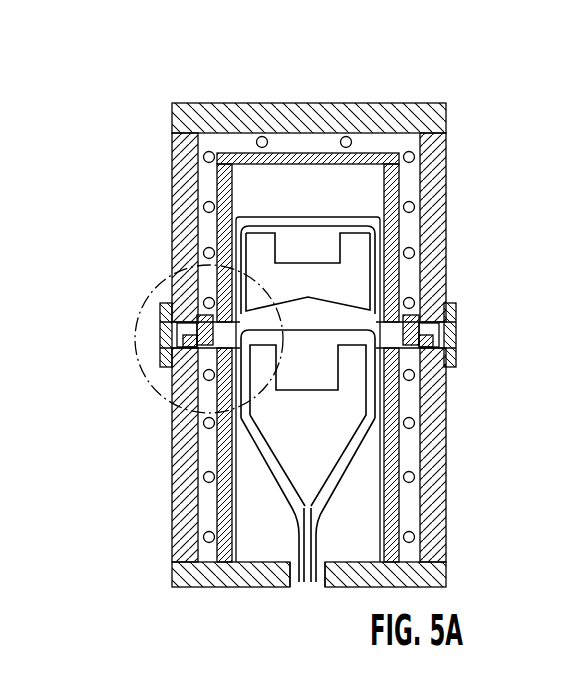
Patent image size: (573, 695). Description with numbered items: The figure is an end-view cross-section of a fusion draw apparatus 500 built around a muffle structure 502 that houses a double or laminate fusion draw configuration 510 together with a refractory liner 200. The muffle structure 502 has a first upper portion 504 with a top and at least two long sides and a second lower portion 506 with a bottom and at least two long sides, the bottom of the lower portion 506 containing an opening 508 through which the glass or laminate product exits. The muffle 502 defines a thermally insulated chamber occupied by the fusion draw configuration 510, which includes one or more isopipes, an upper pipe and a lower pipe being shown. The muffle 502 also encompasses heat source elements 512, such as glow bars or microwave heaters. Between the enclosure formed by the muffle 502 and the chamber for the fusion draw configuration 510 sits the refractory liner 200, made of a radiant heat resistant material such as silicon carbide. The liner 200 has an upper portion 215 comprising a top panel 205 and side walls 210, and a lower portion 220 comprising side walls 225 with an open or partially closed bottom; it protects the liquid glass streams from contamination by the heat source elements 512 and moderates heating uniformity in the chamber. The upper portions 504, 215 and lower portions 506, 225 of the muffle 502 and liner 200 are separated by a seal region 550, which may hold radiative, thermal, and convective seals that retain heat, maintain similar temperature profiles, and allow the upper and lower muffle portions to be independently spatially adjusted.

The fusion draw apparatus 500 is at (456, 72).
The muffle structure 502 is at (334, 103).
The first upper portion 504 is at (446, 272).
The second lower portion 506 is at (446, 477).
The opening 508 is at (323, 591).
The fusion draw configuration 510 is at (328, 217).
The heat source element 512 is at (205, 152).
The refractory liner 200 is at (128, 155).
The top panel 205 is at (370, 153).
The side walls 210 is at (241, 237).
The upper portion 215 is at (505, 143).
The lower portion 220 is at (500, 350).
The side walls 225 is at (220, 508).
The seal region 550 is at (150, 300).